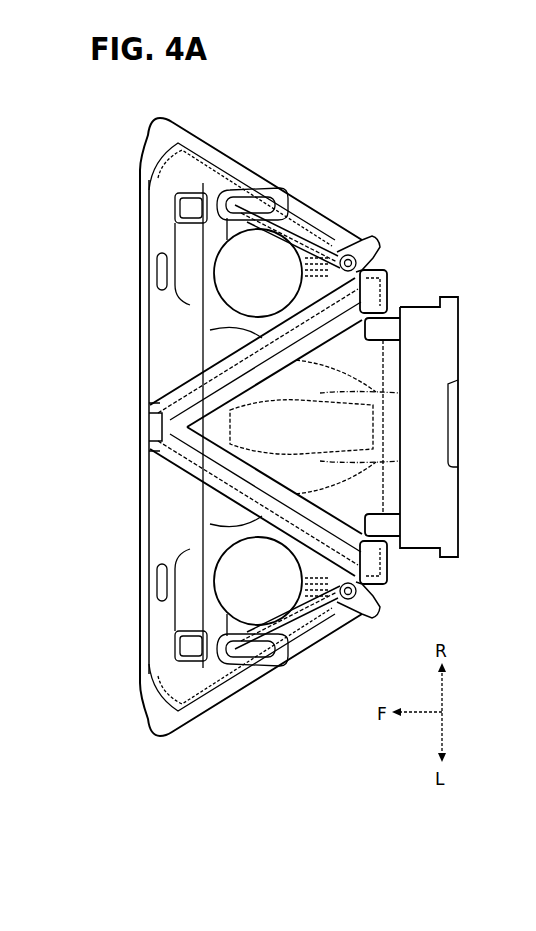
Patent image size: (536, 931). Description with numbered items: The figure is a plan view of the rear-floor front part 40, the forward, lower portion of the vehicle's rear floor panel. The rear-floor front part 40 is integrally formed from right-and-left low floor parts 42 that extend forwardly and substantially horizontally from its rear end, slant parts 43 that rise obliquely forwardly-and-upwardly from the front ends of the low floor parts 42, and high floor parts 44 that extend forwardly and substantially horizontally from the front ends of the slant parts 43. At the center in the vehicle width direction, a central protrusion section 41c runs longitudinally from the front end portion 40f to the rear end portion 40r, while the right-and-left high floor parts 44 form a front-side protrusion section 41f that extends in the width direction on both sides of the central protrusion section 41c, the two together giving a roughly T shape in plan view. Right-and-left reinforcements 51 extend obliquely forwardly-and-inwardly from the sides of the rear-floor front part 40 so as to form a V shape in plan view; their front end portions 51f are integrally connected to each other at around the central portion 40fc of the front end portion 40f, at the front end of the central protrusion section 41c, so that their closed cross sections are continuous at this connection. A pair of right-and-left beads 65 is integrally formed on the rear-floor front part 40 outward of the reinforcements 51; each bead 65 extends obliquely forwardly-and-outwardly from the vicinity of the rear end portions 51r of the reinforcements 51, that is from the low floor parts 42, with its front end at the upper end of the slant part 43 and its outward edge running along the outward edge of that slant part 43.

The rear-floor front part 40 is at (130, 169).
The front end portion 40f is at (140, 202).
The front-side protrusion section 41f is at (172, 260).
The high floor part 44 is at (168, 297).
The reinforcement 51 is at (190, 370).
The front end portion of reinforcement 51f is at (150, 412).
The central portion of front end portion 40fc is at (140, 428).
The rear end portion of reinforcement 51r is at (388, 293).
The bead 65 is at (256, 200).
The slant part 43 is at (277, 230).
The rear end portion 40r is at (383, 252).
The central protrusion section 41c is at (420, 393).
The low floor part 42 is at (357, 347).